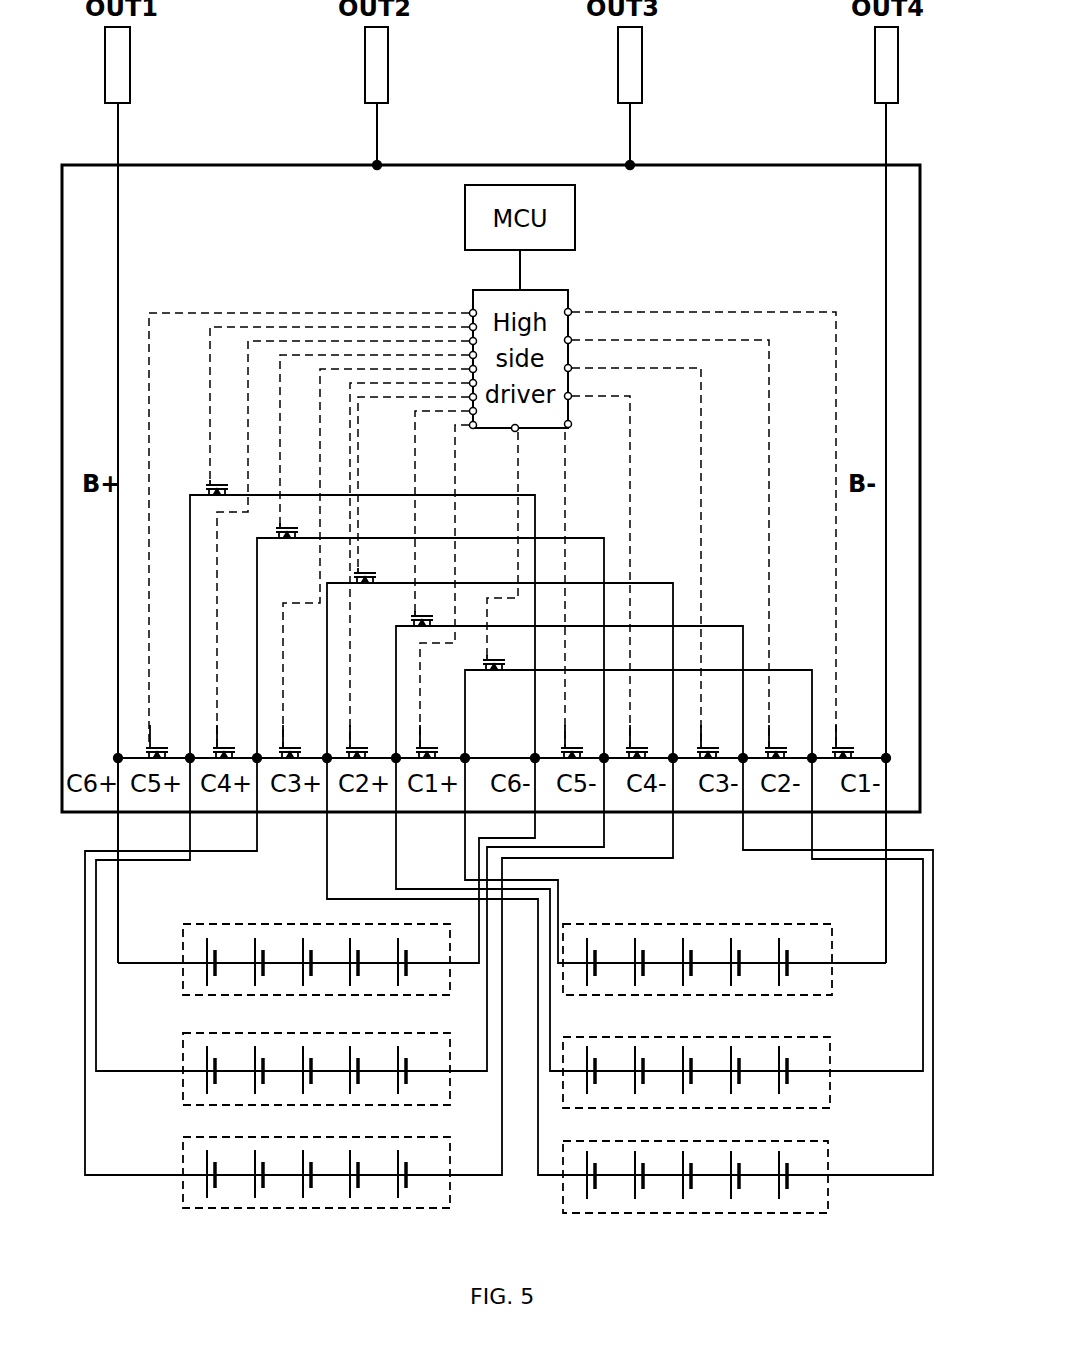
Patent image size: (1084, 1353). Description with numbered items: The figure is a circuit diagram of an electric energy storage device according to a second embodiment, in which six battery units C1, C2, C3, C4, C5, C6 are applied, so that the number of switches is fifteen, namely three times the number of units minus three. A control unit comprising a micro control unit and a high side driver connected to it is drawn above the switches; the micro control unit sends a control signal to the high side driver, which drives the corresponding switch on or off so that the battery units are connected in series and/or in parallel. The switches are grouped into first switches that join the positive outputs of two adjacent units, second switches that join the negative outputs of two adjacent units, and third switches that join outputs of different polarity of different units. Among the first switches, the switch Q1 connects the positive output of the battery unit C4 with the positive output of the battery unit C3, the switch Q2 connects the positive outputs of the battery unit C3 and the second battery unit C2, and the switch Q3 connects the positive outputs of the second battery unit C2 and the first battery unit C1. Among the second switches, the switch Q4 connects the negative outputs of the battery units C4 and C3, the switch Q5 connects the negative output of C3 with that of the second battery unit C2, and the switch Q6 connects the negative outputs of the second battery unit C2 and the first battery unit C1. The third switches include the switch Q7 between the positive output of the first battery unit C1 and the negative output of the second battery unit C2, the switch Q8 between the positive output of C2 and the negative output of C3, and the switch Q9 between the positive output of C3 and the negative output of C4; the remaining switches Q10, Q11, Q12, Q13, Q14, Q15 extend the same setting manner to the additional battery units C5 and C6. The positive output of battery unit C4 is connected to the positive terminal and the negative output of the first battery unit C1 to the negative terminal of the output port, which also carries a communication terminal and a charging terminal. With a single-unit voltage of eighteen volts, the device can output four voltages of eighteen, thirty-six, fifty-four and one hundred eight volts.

The switch Q1 is at (293, 730).
The switch Q2 is at (360, 730).
The switch Q3 is at (428, 730).
The switch Q4 is at (570, 730).
The switch Q5 is at (637, 730).
The switch Q6 is at (707, 730).
The switch Q7 is at (497, 649).
The switch Q8 is at (417, 605).
The switch Q9 is at (357, 561).
The switch Q10 is at (300, 517).
The switch Q11 is at (216, 470).
The switch Q12 is at (160, 730).
The switch Q13 is at (227, 730).
The switch Q14 is at (772, 730).
The switch Q15 is at (841, 730).
The first battery unit C1 is at (825, 943).
The second battery unit C2 is at (825, 1090).
The battery unit C3 is at (825, 1175).
The battery unit C4 is at (187, 1185).
The battery unit C5 is at (187, 1100).
The battery unit C6 is at (187, 925).